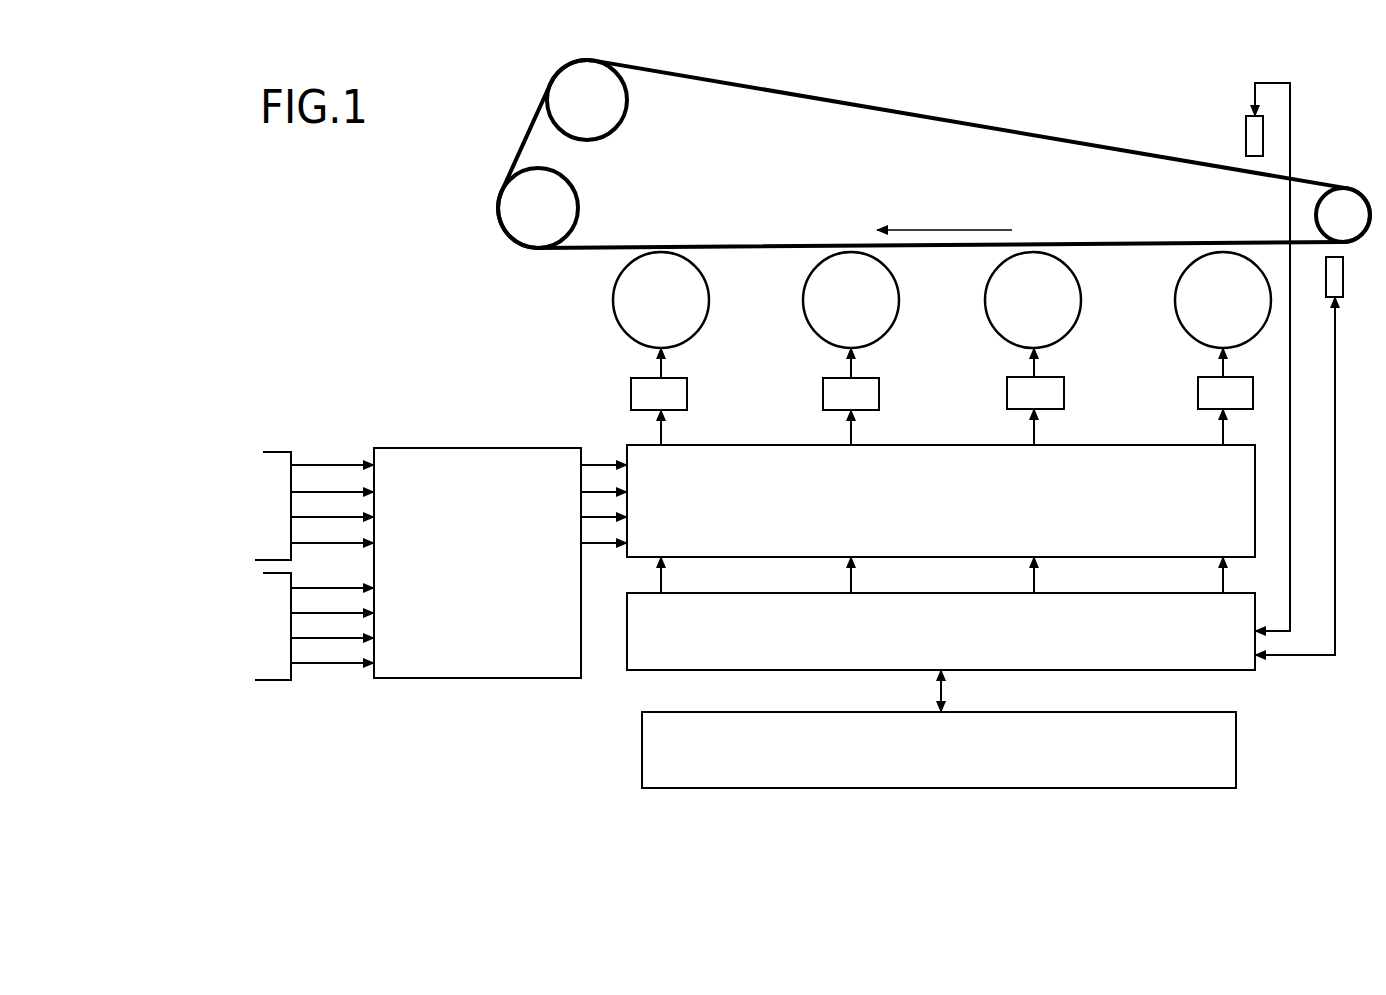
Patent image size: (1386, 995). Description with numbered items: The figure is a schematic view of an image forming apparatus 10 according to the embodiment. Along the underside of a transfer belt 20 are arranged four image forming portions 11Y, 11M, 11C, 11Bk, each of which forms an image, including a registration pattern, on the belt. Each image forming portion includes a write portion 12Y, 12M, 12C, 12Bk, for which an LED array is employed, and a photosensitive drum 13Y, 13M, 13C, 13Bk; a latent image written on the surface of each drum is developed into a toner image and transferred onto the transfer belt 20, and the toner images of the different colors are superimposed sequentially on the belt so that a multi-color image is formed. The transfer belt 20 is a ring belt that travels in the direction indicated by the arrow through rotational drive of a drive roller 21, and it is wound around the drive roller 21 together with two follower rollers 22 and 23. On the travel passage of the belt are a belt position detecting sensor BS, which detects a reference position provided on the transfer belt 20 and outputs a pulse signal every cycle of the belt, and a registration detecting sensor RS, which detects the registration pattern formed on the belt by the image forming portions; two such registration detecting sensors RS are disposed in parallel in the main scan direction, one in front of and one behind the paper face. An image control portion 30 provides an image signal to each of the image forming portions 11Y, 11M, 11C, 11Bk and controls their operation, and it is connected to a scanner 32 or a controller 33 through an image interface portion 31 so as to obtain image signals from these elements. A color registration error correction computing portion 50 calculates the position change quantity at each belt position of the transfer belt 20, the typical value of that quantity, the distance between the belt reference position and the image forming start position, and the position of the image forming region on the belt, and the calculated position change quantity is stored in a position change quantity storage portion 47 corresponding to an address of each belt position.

The image forming apparatus 10 is at (1225, 83).
The transfer belt 20 is at (983, 127).
The drive roller 21 is at (572, 222).
The follower roller 22 is at (617, 100).
The follower roller 23 is at (1345, 200).
The belt position detecting sensor BS is at (1246, 137).
The registration detecting sensor RS is at (1337, 269).
The image forming portion 11Y is at (590, 345).
The image forming portion 11M is at (780, 345).
The image forming portion 11C is at (980, 337).
The image forming portion 11Bk is at (1167, 335).
The write portion 12Y is at (678, 397).
The write portion 12M is at (868, 397).
The write portion 12C is at (1065, 397).
The write portion 12Bk is at (1268, 378).
The photosensitive drum 13Y is at (618, 283).
The photosensitive drum 13M is at (808, 282).
The photosensitive drum 13C is at (990, 283).
The photosensitive drum 13Bk is at (1190, 275).
The image control portion 30 is at (675, 495).
The image interface portion 31 is at (519, 675).
The scanner 32 is at (288, 458).
The controller 33 is at (291, 683).
The position change quantity storage portion 47 is at (995, 712).
The color registration error correction computing portion 50 is at (675, 647).